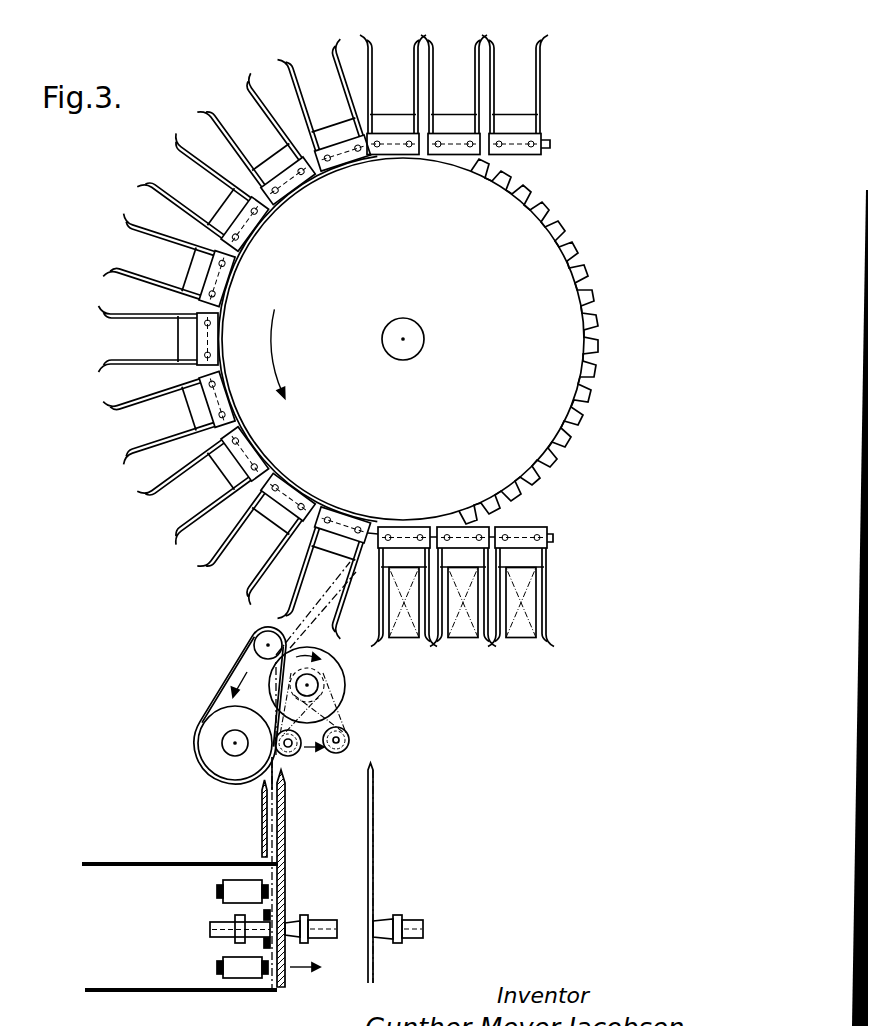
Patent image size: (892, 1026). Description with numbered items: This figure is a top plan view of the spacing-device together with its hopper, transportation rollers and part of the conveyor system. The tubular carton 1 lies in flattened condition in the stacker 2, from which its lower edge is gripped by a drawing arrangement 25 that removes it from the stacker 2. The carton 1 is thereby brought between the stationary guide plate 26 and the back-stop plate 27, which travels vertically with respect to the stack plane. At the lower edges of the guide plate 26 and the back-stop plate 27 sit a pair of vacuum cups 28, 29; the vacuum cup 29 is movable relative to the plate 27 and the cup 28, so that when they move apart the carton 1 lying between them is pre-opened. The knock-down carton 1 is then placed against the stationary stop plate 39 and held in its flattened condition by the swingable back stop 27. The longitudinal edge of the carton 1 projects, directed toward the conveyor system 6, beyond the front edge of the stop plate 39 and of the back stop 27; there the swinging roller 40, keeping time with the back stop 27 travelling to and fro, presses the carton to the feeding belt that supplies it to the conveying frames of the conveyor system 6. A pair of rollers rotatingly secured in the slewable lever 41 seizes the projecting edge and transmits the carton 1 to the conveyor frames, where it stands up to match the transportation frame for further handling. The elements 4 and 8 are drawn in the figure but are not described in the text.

The tubular carton 1 is at (312, 608).
The stacker 2 is at (112, 867).
The thread guide 4 is at (274, 785).
The conveyor system 6 is at (553, 540).
The toothed wheel 8 is at (560, 467).
The drawing arrangement 25 is at (237, 888).
The stationary guide plate 26 is at (262, 945).
The back-stop plate 27 is at (286, 822).
The vacuum cup 28 is at (211, 924).
The vacuum cup 29 is at (304, 918).
The stationary stop plate 39 is at (262, 802).
The swinging roller 40 is at (296, 753).
The slewable lever 41 is at (205, 713).